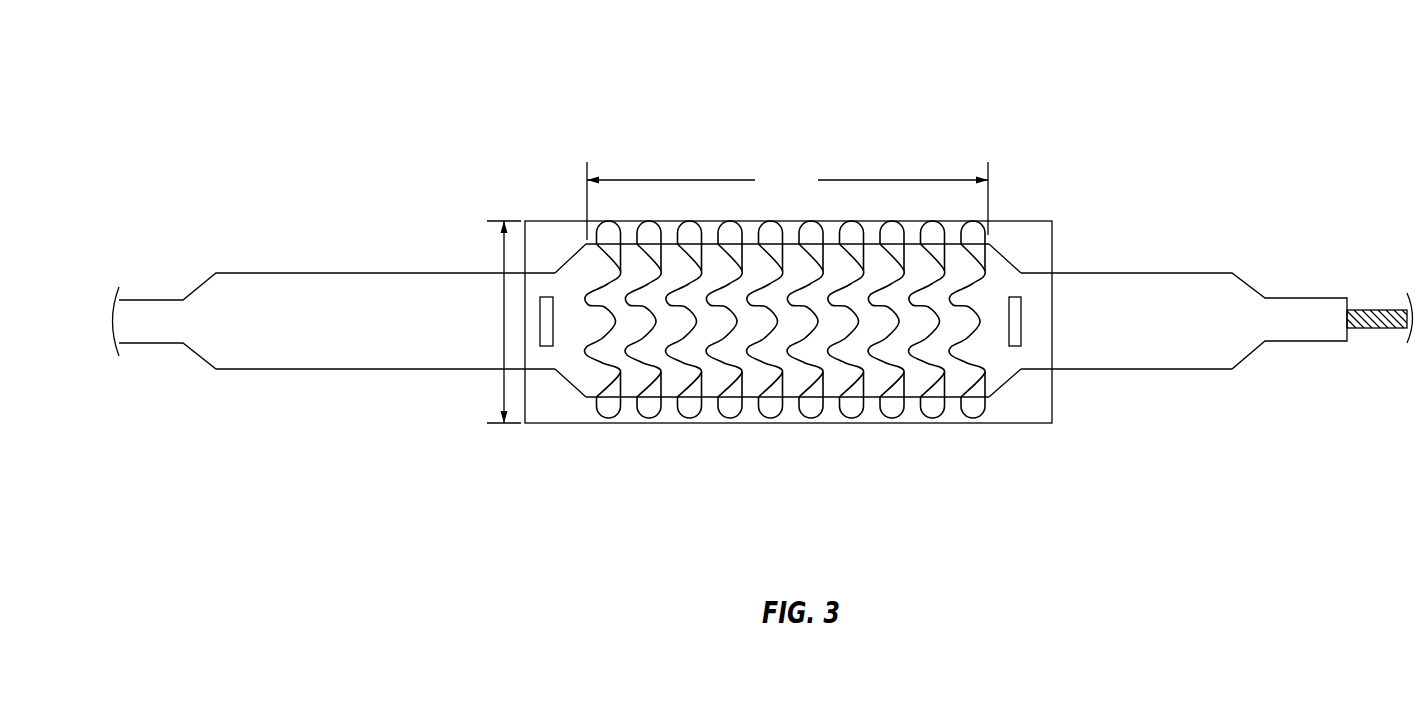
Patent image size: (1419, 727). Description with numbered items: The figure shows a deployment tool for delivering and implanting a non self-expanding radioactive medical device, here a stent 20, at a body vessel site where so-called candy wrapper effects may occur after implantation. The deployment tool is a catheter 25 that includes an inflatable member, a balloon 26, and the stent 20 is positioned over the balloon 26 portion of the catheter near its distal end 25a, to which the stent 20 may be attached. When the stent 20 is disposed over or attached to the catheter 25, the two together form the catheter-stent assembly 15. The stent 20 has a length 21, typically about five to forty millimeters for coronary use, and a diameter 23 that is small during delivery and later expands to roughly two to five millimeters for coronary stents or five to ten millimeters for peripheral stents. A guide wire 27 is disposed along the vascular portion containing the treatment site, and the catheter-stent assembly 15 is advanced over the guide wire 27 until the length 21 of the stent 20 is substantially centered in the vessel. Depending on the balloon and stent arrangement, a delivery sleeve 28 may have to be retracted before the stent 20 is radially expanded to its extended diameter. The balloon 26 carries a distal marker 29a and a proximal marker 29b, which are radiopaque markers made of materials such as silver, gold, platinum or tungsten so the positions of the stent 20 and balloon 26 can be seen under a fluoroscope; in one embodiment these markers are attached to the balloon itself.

The catheter-stent assembly 15 is at (528, 63).
The stent 20 is at (876, 350).
The length 21 is at (787, 201).
The diameter 23 is at (503, 254).
The catheter 25 is at (285, 271).
The distal end 25a is at (945, 448).
The balloon 26 is at (757, 395).
The guide wire 27 is at (1385, 323).
The delivery sleeve 28 is at (543, 423).
The distal marker 29a is at (1013, 303).
The proximal marker 29b is at (547, 305).